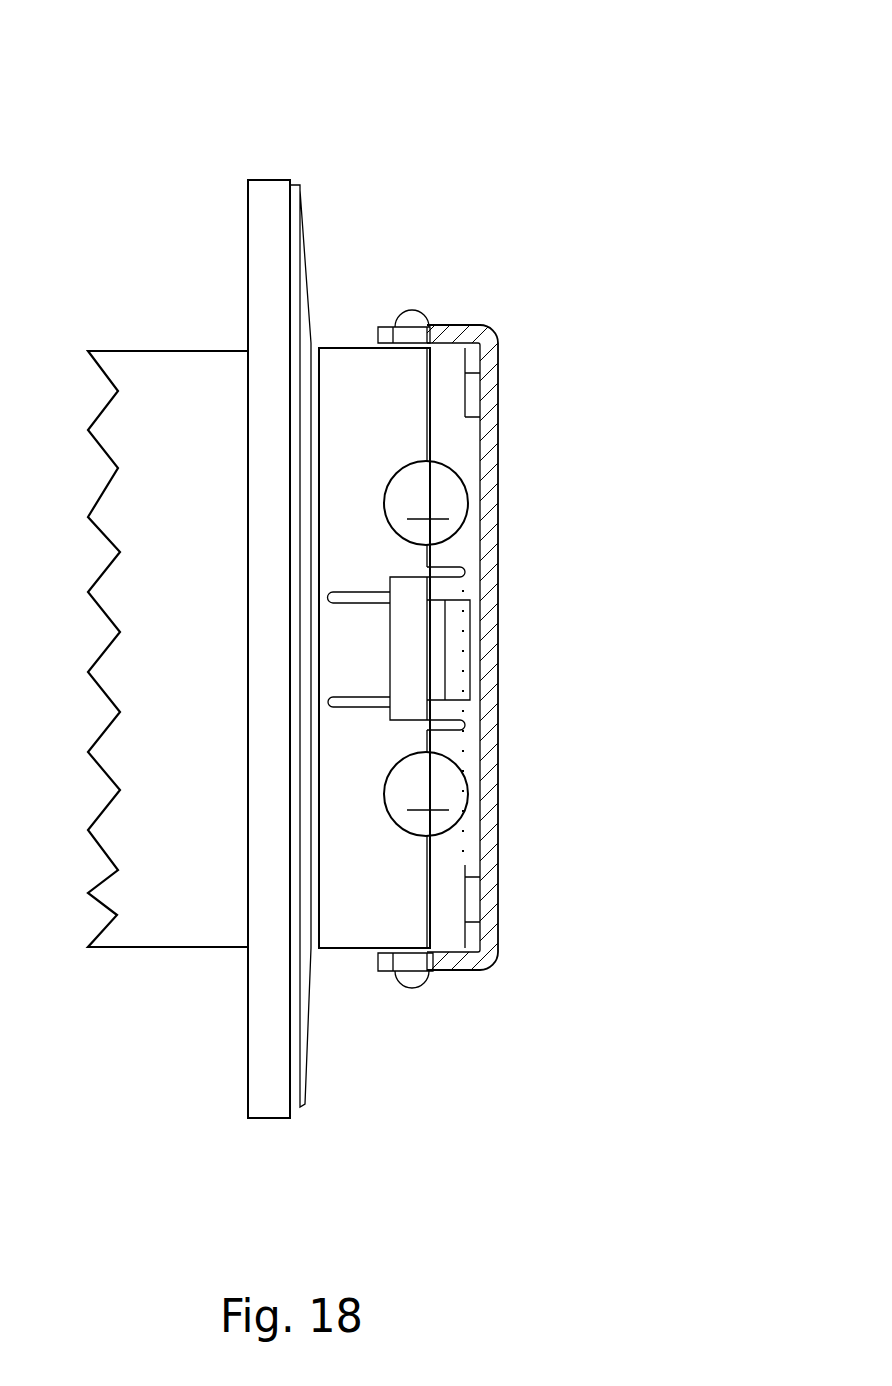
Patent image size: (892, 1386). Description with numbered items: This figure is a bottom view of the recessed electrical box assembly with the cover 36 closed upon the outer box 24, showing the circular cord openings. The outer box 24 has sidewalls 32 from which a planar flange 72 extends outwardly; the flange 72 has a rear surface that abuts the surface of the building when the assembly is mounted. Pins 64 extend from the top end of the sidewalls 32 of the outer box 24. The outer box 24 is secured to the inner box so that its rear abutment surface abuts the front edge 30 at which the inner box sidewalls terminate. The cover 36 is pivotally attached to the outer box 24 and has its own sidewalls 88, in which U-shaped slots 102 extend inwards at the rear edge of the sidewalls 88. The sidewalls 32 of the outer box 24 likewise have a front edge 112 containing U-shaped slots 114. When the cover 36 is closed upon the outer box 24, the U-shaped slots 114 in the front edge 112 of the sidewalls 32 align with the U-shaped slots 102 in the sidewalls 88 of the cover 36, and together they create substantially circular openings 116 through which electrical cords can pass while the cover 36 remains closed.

The outer box 24 is at (168, 349).
The flange 72 is at (290, 183).
The pins 64 is at (412, 311).
The sidewalls 32 is at (388, 443).
The front edge 112 is at (432, 431).
The circular openings 116 is at (426, 648).
The U-shaped slots 114 is at (383, 503).
The U-shaped slots 102 is at (471, 505).
The cover 36 is at (500, 650).
The front edge 30 is at (466, 712).
The sidewalls 88 is at (445, 887).